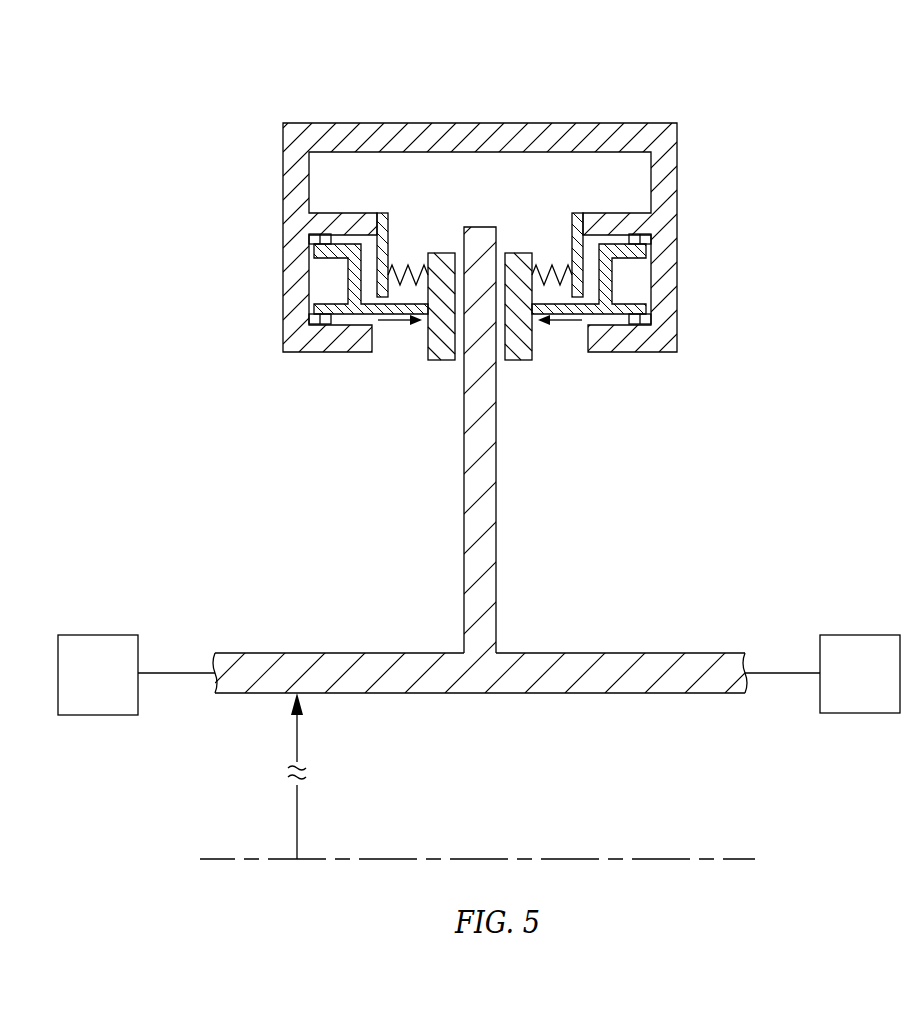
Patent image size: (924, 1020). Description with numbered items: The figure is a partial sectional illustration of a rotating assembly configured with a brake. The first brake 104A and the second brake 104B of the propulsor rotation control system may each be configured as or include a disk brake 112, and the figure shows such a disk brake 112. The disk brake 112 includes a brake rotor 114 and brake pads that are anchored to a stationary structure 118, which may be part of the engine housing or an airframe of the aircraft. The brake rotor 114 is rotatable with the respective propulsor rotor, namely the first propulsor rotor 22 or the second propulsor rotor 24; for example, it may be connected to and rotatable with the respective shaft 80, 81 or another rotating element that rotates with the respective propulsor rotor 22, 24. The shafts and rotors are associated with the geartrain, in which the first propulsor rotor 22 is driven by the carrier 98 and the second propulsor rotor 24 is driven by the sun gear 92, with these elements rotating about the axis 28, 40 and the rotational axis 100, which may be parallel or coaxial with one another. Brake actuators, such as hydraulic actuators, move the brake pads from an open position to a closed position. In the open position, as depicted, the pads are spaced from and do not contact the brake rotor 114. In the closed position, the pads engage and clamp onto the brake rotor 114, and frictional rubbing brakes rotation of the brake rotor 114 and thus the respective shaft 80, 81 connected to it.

The first brake 104A is at (487, 454).
The second brake 104B is at (487, 454).
The disk brake 112 is at (810, 45).
The stationary structure 118 is at (601, 112).
The brake rotor 114 is at (480, 495).
The shaft 80 is at (480, 708).
The shaft 81 is at (658, 693).
The first propulsor rotor 22 is at (136, 675).
The second propulsor rotor 24 is at (128, 692).
The sun gear 92 is at (822, 674).
The carrier 98 is at (888, 692).
The axis 28 is at (558, 877).
The axis 40 is at (558, 877).
The rotational axis 100 is at (740, 859).